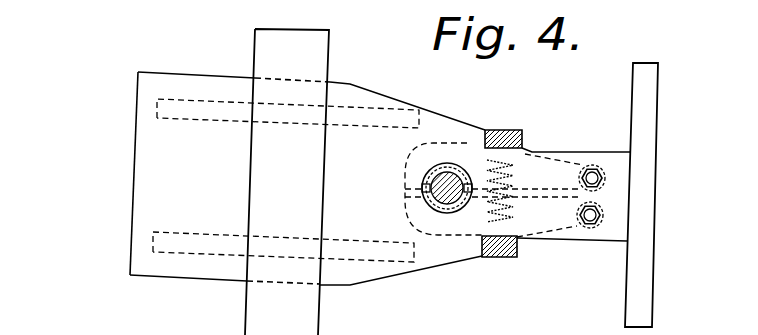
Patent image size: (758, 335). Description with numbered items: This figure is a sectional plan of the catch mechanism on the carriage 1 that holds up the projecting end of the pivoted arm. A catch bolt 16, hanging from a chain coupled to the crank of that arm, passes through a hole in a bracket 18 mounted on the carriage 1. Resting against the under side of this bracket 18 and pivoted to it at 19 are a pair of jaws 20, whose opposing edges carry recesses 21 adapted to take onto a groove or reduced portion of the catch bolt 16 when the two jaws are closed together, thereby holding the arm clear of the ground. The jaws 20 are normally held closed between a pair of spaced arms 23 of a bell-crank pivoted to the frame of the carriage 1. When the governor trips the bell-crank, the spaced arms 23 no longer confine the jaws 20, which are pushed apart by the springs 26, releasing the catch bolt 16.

The carriage 1 is at (642, 275).
The catch bolt 16 is at (435, 175).
The bracket 18 is at (615, 202).
The pivot 19 is at (595, 172).
The jaws 20 is at (568, 162).
The recesses 21 is at (468, 203).
The spaced arms of bell-crank 23 is at (498, 130).
The springs 26 is at (484, 172).